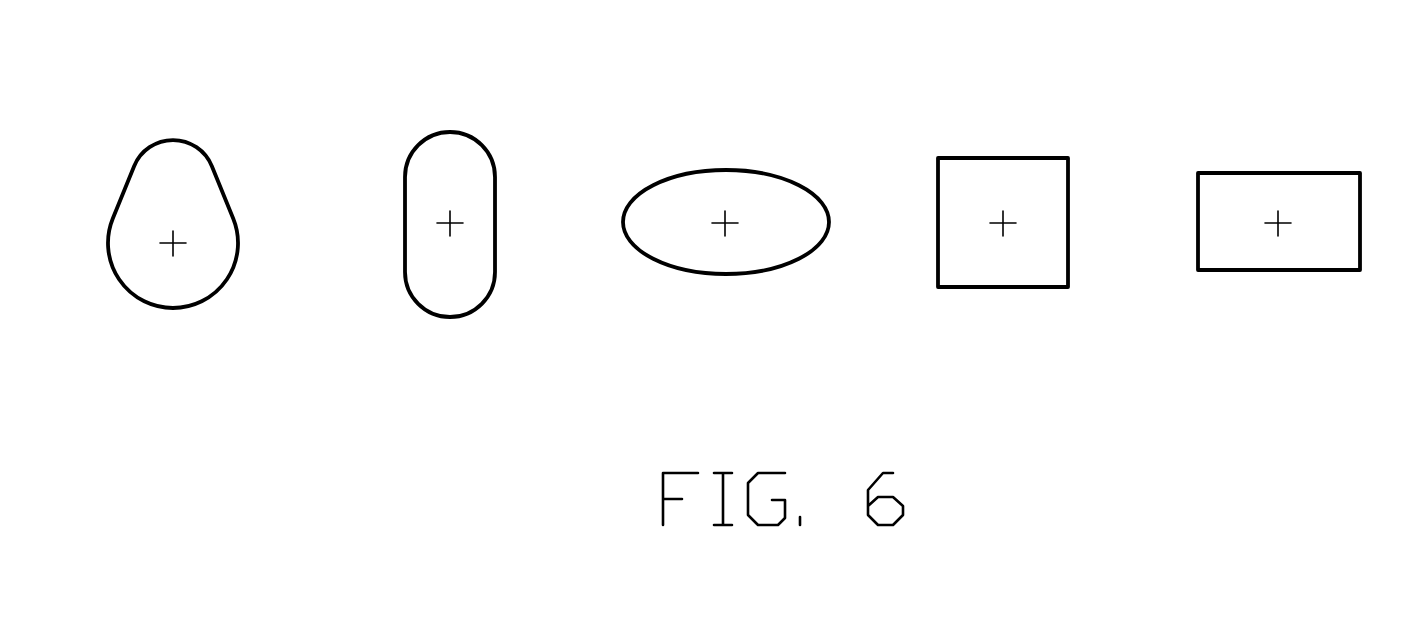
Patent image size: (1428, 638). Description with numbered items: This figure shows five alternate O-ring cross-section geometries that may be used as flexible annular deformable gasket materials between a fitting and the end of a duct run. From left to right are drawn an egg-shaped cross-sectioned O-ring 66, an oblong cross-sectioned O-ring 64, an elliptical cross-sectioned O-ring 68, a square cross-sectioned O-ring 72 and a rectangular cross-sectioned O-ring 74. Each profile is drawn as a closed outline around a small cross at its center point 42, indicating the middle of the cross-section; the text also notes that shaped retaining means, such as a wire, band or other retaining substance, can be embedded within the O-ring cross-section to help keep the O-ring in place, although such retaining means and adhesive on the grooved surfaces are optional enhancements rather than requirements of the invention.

The center of pattern element 42 is at (764, 303).
The oblong cross-sectioned O-ring 64 is at (486, 182).
The egg-shaped cross-sectioned O-ring 66 is at (207, 177).
The elliptical cross-sectioned O-ring 68 is at (738, 163).
The square cross-sectioned O-ring 72 is at (1011, 165).
The rectangular cross-sectioned O-ring 74 is at (1301, 163).